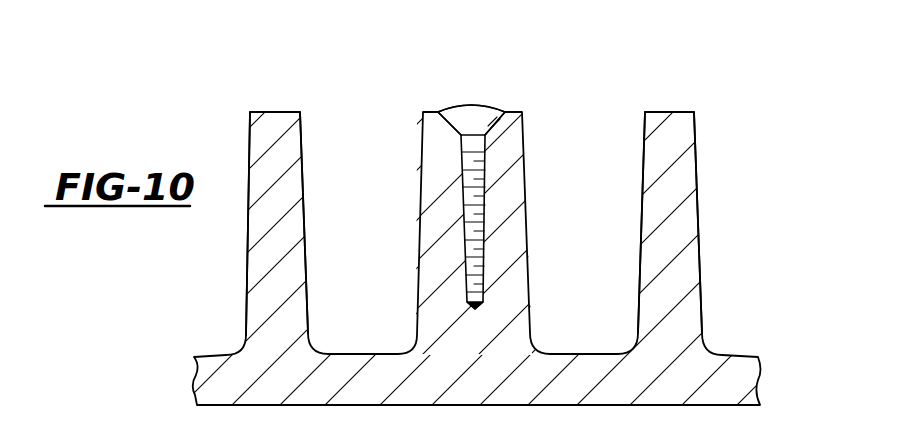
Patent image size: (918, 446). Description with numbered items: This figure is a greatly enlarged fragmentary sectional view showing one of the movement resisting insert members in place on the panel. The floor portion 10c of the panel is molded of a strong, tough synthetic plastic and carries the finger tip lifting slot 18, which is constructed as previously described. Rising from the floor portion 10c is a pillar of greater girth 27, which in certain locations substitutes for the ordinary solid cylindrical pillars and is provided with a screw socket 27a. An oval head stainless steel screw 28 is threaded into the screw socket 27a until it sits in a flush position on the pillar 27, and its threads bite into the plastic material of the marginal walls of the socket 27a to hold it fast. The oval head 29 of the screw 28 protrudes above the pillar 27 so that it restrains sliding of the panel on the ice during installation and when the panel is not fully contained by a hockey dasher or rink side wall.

The floor portion 10c is at (738, 365).
The finger tip lifting slot 18 is at (300, 257).
The pillar of greater girth 27 is at (529, 283).
The screw socket 27a is at (485, 213).
The oval head stainless steel screw 28 is at (497, 148).
The oval head 29 is at (483, 103).